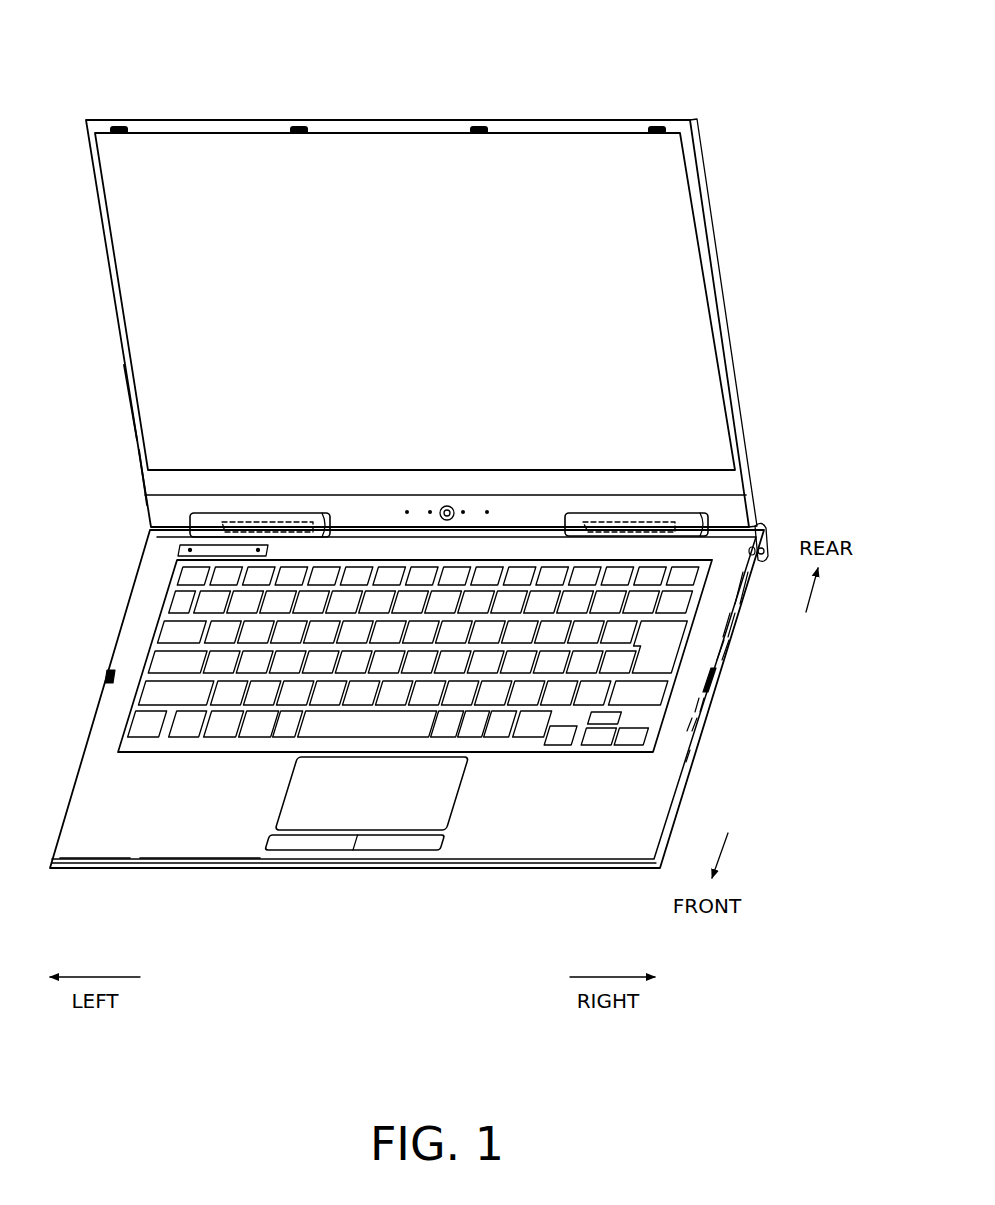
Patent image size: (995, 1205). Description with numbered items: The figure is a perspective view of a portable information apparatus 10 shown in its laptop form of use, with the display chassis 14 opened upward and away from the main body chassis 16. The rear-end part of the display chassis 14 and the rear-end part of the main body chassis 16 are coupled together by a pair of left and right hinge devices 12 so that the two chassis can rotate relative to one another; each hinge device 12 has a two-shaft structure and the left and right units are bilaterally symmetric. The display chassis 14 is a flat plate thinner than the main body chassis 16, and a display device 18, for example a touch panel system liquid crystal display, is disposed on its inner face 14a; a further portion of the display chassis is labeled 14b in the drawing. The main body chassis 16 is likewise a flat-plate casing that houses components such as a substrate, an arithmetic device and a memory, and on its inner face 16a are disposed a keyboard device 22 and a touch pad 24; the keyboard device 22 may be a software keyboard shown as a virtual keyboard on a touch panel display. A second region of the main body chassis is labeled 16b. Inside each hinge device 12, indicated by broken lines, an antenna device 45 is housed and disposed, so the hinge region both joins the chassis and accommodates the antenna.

The portable information apparatus 10 is at (54, 52).
The hinge device 12 is at (288, 511).
The display chassis 14 is at (594, 112).
The inner face of display chassis 14a is at (166, 487).
The display chassis cover member 14b is at (155, 400).
The main body chassis 16 is at (454, 870).
The inner face of main body chassis 16a is at (145, 848).
The body chassis lower cover 16b is at (222, 848).
The display device 18 is at (343, 150).
The keyboard device 22 is at (166, 660).
The touch pad 24 is at (347, 810).
The antenna device 45 is at (238, 519).